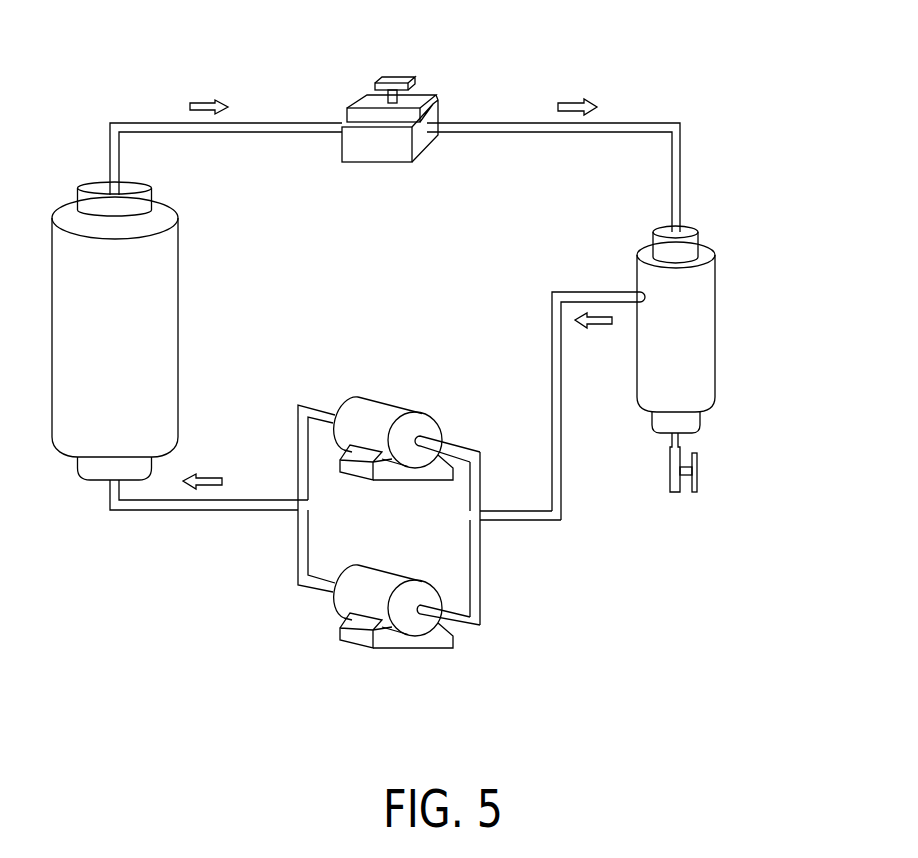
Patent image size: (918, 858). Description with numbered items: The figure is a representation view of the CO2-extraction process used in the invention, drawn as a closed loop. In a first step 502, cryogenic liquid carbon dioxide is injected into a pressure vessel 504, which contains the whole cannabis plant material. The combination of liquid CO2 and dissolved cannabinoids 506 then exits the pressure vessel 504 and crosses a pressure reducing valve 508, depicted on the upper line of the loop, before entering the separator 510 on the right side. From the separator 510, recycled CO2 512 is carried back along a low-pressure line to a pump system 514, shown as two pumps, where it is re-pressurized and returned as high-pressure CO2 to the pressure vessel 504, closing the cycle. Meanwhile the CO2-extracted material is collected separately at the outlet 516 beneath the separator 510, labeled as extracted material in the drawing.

The first step 502 is at (197, 588).
The pressure vessel 504 is at (178, 278).
The combination liquid CO2 and dissolved cannabinoids 506 is at (171, 45).
The pressure reducing valve 508 is at (398, 75).
The separator 510 is at (715, 332).
The recycled CO2 512 is at (583, 247).
The pump system 514 is at (389, 383).
The extracted material outlet 516 is at (748, 525).